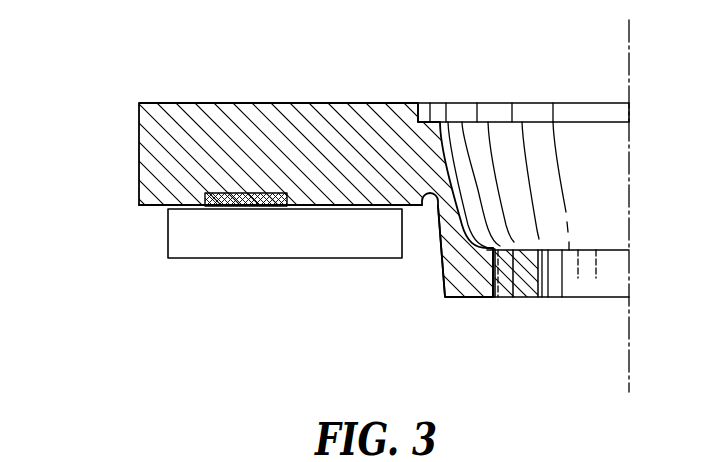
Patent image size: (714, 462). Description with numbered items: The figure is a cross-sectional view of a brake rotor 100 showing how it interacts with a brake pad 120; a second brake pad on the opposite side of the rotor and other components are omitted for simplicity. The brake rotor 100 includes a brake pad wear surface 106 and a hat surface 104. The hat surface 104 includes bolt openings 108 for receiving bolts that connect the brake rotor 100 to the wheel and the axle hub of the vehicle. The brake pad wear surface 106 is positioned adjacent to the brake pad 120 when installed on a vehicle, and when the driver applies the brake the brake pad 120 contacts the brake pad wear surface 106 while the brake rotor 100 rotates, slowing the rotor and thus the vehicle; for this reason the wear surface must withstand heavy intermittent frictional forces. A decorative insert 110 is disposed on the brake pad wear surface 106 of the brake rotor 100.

The brake rotor 100 is at (258, 84).
The hat surface 104 is at (475, 297).
The brake pad wear surface 106 is at (162, 207).
The bolt openings 108 is at (498, 282).
The decorative insert 110 is at (227, 208).
The brake pad 120 is at (277, 260).